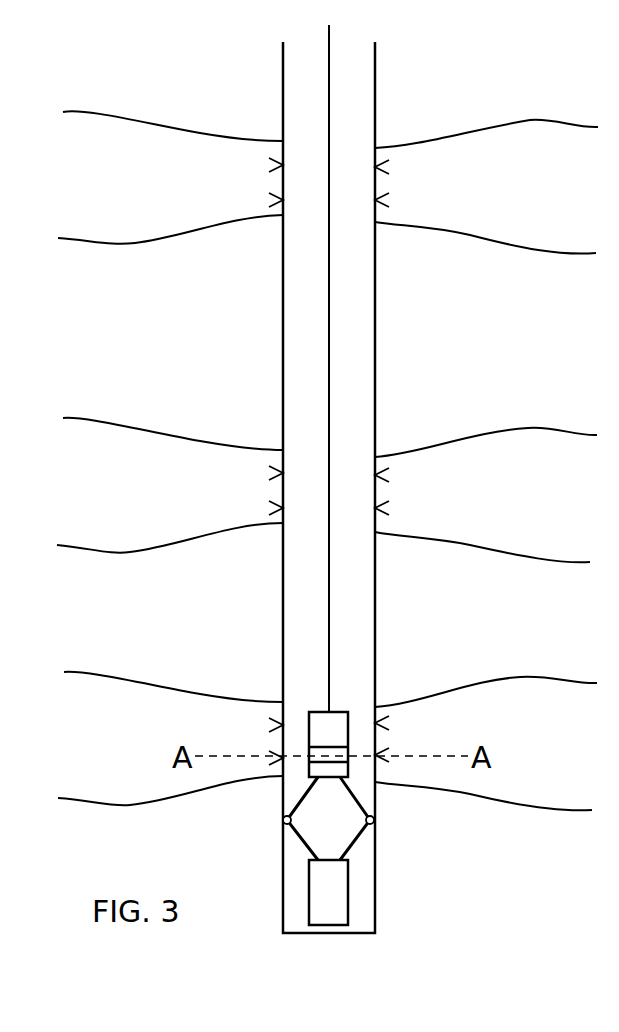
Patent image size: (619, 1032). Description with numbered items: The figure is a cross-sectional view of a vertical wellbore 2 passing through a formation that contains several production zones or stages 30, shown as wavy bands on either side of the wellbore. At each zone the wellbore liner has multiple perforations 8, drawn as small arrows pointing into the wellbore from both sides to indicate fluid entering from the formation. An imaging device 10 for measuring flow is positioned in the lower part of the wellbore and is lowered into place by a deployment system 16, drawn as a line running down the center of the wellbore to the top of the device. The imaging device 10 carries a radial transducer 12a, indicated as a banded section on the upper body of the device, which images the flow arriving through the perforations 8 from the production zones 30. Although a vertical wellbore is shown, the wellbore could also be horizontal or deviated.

The wellbore 2 is at (375, 355).
The perforations 8 is at (389, 513).
The imaging device 10 is at (368, 862).
The radial transducer 12a is at (346, 750).
The deployment system 16 is at (329, 318).
The production zones or stages 30 is at (560, 122).